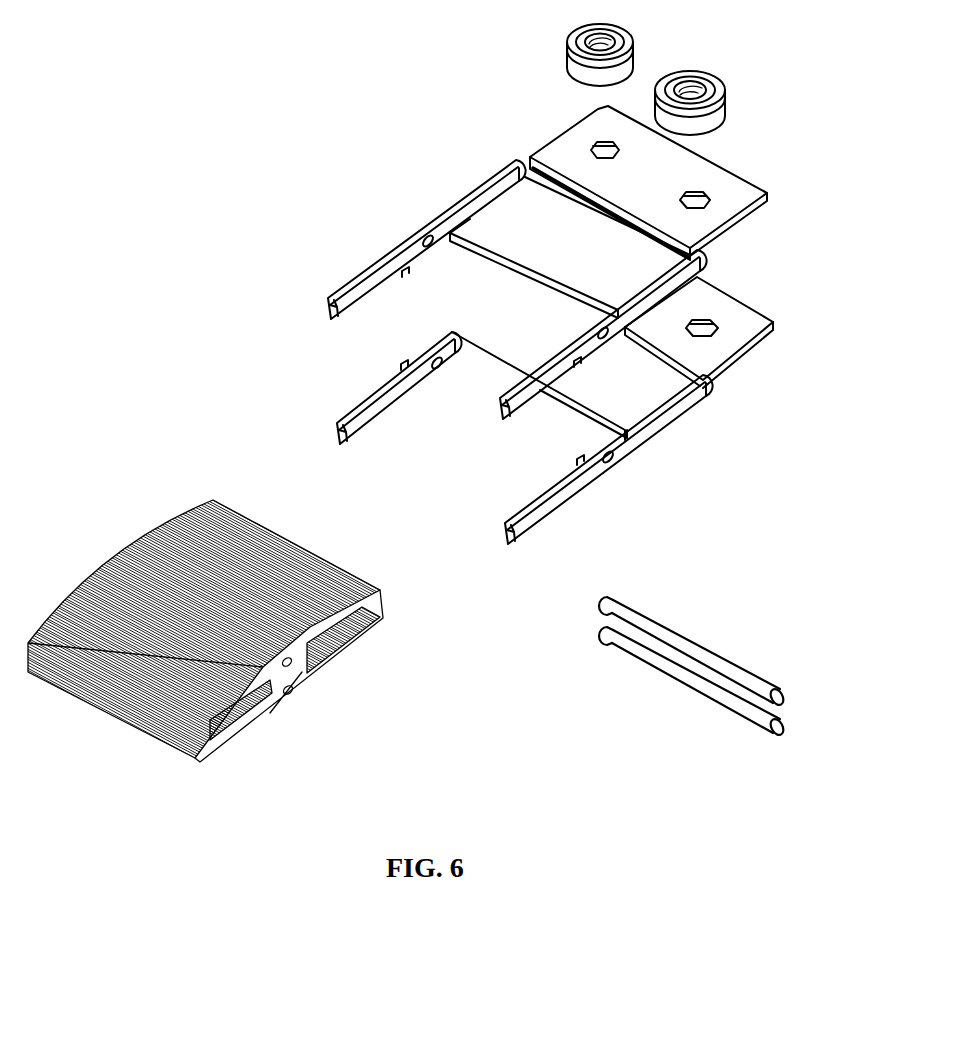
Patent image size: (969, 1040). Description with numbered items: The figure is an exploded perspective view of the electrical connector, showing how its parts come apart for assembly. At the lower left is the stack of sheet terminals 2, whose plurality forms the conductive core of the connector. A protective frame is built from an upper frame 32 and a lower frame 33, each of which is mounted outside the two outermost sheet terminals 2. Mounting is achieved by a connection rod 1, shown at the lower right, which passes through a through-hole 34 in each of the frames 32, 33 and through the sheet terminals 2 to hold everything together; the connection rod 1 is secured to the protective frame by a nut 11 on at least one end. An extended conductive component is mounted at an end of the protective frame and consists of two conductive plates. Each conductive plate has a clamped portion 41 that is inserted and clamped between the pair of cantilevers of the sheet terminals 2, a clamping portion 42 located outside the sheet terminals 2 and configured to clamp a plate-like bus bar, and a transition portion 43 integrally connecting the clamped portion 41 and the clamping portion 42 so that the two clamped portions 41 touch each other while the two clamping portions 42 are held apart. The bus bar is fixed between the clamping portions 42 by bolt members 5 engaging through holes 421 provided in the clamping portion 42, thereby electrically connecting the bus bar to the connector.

The connection rod 1 is at (696, 667).
The nut 11 is at (787, 687).
The sheet terminal 2 is at (302, 682).
The upper frame 32 is at (457, 197).
The lower frame 33 is at (628, 467).
The through-hole 34 is at (620, 457).
The clamped portion 41 is at (513, 220).
The clamping portion 42 is at (651, 186).
The through hole 421 is at (604, 160).
The transition portion 43 is at (640, 230).
The bolt member 5 is at (727, 110).